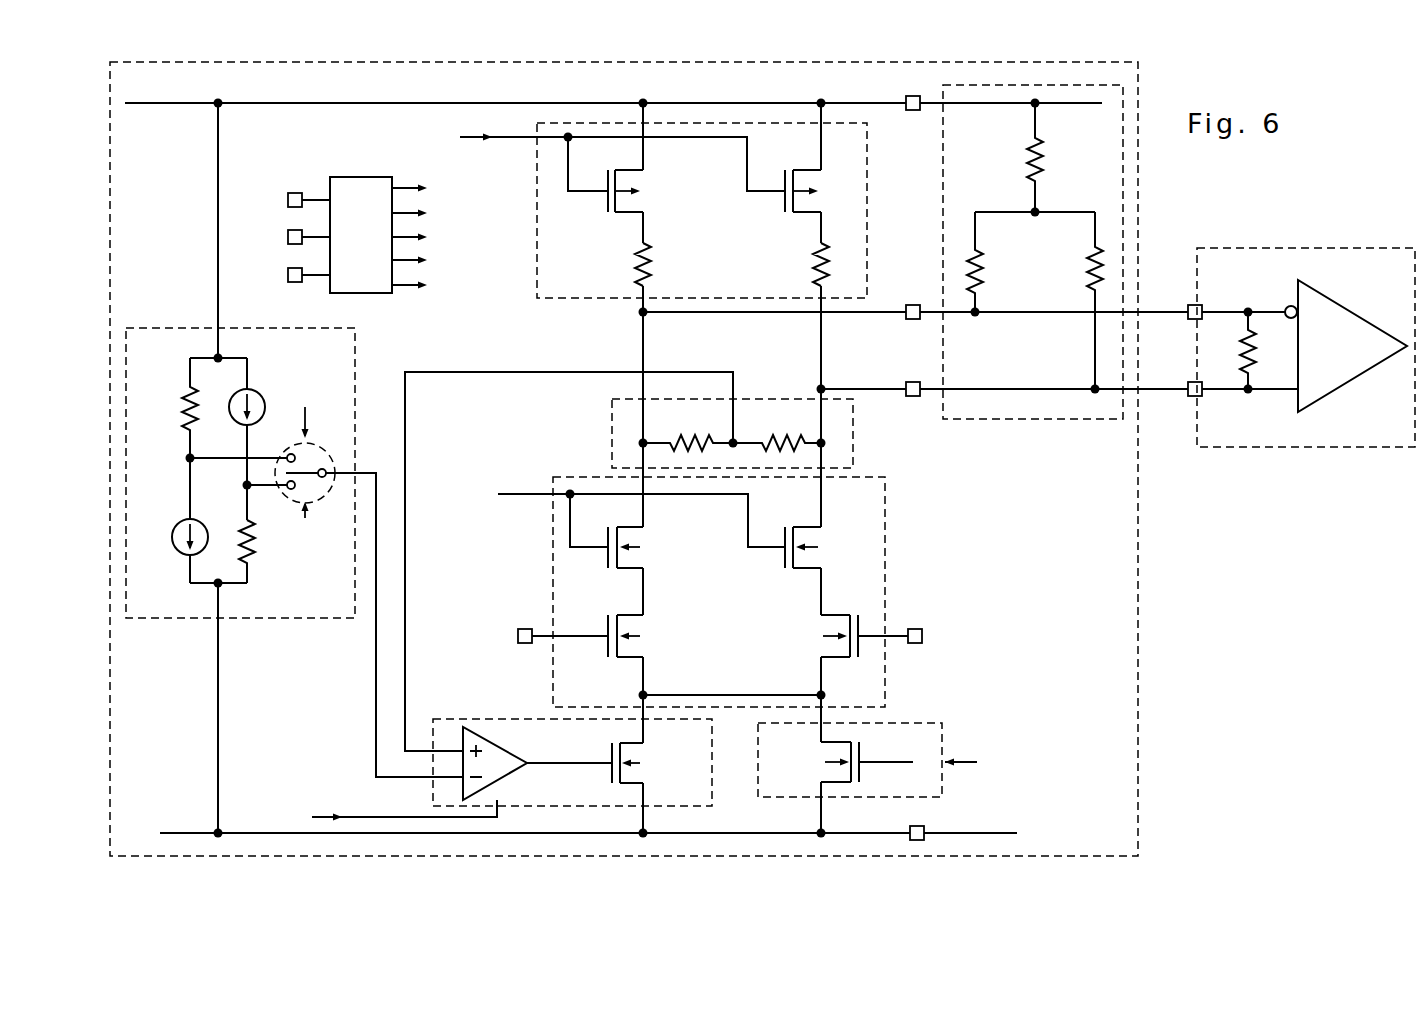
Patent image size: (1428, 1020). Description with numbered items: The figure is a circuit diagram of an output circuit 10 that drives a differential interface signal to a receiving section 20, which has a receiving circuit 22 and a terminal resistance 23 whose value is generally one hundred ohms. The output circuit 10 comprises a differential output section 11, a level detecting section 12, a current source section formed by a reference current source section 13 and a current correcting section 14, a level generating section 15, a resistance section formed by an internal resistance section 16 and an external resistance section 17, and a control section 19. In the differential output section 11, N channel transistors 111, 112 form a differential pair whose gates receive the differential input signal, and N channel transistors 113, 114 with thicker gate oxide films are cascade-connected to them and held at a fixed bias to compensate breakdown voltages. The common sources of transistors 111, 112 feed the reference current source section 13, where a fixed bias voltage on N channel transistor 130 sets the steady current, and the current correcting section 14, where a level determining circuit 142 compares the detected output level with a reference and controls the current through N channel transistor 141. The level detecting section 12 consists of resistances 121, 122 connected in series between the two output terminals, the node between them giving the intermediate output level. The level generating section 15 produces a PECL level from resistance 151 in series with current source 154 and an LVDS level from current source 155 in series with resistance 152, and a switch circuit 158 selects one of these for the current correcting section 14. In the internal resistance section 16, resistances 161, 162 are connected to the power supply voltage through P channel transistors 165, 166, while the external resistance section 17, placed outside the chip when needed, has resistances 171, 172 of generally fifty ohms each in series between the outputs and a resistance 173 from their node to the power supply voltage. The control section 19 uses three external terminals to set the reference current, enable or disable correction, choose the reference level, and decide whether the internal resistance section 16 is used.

The output circuit 10 is at (1138, 590).
The differential output section 11 is at (885, 535).
The level detecting section 12 is at (612, 432).
The reference current source section 13 is at (913, 723).
The current correcting section 14 is at (455, 719).
The level generating section 15 is at (170, 328).
The internal resistance section 16 is at (537, 237).
The external resistance section 17 is at (1043, 419).
The control section 19 is at (357, 177).
The receiving section 20 is at (1260, 447).
The receiving circuit 22 is at (1351, 312).
The terminal resistance 23 is at (1240, 340).
The N channel transistor 111 is at (650, 636).
The N channel transistor 112 is at (823, 636).
The N channel transistor 113 is at (650, 547).
The N channel transistor 114 is at (790, 556).
The resistance 121 is at (672, 437).
The resistance 122 is at (800, 437).
The N channel transistor 130 is at (825, 762).
The N channel transistor 141 is at (645, 763).
The level determining circuit 142 is at (497, 735).
The resistance 151 is at (192, 392).
The resistance 152 is at (256, 548).
The current source 154 is at (180, 550).
The current source 155 is at (250, 389).
The switch circuit 158 is at (332, 445).
The resistance 161 is at (640, 265).
The resistance 162 is at (830, 262).
The P channel transistor 165 is at (643, 191).
The P channel transistor 166 is at (825, 191).
The resistance 171 is at (1095, 255).
The resistance 172 is at (975, 258).
The resistance 173 is at (1045, 165).